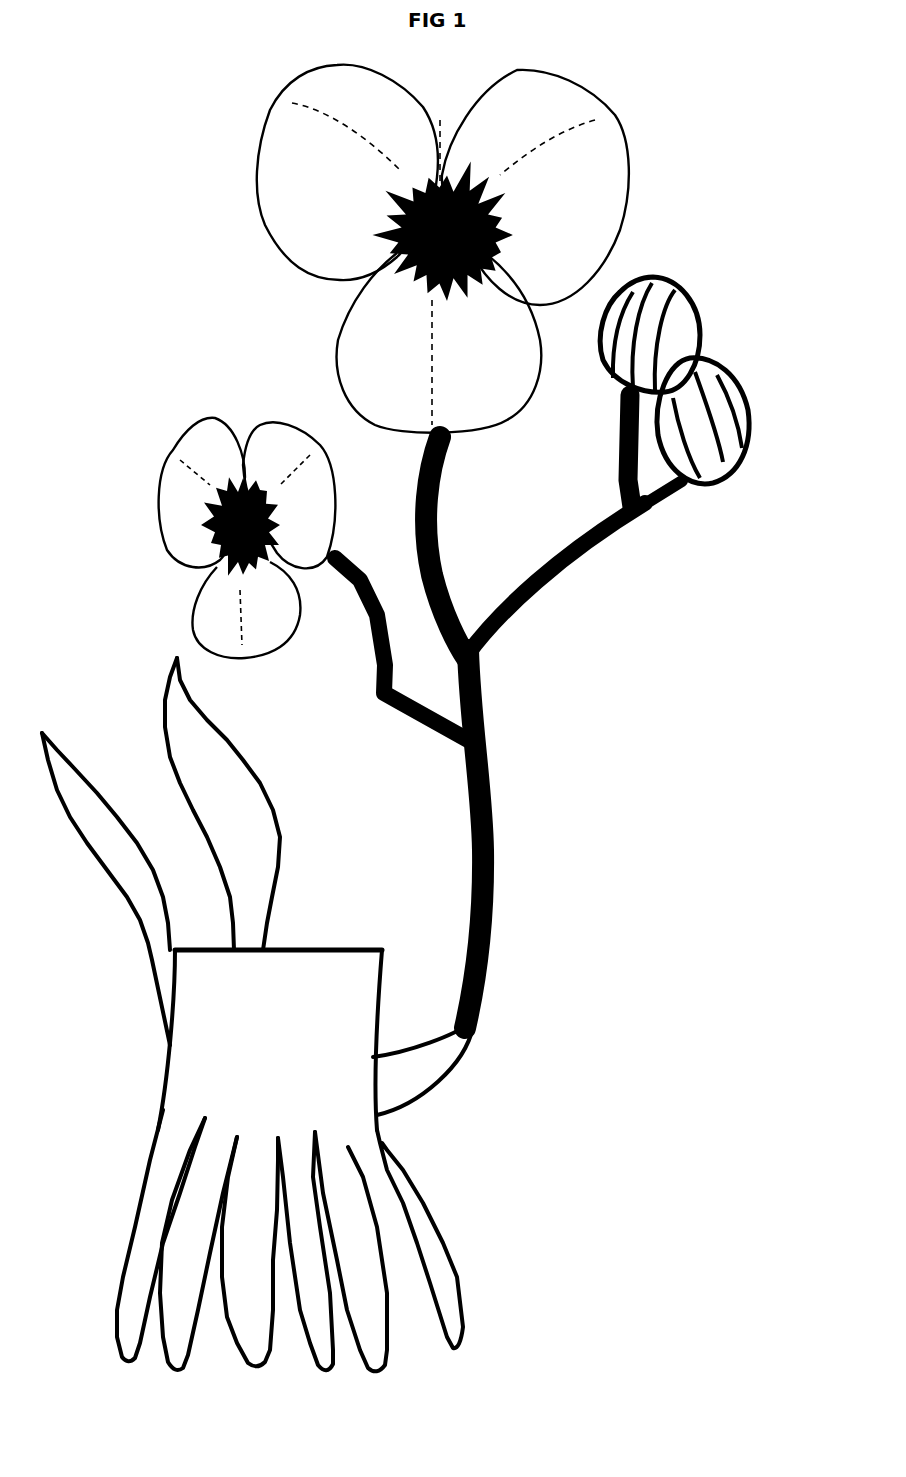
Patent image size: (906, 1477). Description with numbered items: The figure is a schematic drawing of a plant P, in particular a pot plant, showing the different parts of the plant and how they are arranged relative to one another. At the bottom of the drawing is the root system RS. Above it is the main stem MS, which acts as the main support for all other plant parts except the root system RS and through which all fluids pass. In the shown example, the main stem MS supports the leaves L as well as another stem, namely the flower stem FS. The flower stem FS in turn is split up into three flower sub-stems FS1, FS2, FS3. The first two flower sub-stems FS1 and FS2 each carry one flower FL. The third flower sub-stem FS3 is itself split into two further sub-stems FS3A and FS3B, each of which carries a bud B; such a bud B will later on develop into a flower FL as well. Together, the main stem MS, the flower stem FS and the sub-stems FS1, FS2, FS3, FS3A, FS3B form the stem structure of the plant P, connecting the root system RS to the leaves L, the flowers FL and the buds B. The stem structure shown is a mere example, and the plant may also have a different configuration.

The flower FL is at (567, 103).
The bud B is at (668, 318).
The flower sub-stem FS3B is at (613, 462).
The flower sub-stem FS3A is at (672, 490).
The flower sub-stem FS3 is at (548, 572).
The flower sub-stem FS2 is at (443, 552).
The flower sub-stem FS1 is at (380, 657).
The flower stem FS is at (498, 863).
The leaves L is at (195, 762).
The main stem MS is at (202, 1070).
The root system RS is at (615, 1130).
The plant P is at (655, 893).